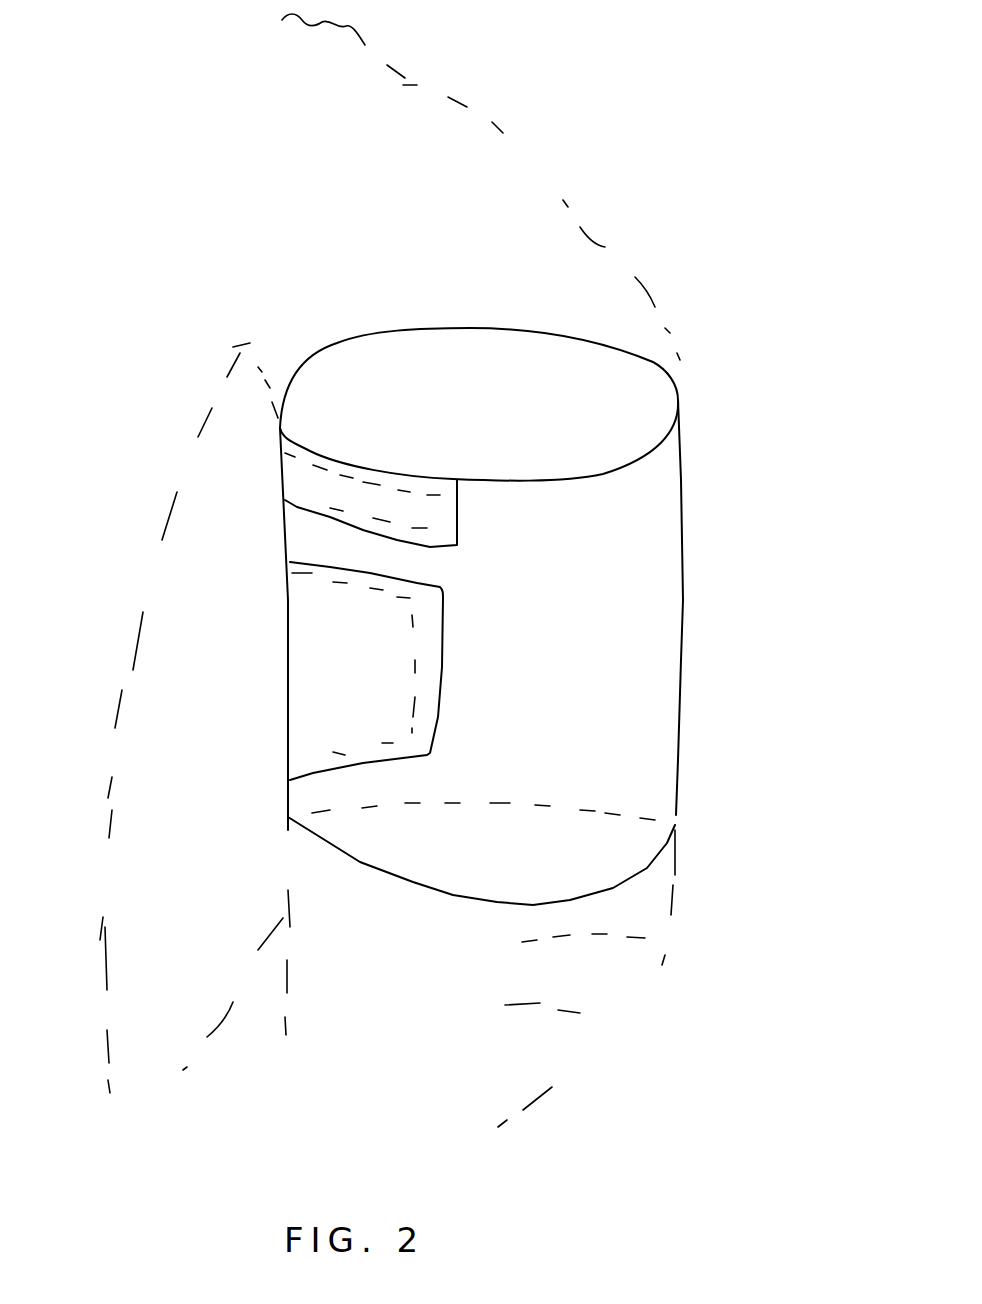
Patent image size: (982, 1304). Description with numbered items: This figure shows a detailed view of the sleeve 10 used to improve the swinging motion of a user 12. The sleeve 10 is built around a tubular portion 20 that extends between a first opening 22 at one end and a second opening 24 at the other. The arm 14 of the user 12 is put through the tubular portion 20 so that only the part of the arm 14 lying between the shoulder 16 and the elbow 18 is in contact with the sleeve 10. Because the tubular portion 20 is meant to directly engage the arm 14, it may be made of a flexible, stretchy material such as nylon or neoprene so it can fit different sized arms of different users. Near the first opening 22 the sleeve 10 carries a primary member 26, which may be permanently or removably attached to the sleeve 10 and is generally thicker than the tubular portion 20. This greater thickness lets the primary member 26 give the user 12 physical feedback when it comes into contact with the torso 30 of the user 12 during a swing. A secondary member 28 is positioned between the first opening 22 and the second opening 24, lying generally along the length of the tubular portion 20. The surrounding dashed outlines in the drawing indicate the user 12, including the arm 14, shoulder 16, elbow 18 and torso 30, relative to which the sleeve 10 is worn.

The sleeve 10 is at (554, 621).
The user 12 is at (22, 837).
The arm 14 is at (676, 936).
The shoulder 16 is at (441, 229).
The elbow 18 is at (605, 1037).
The tubular portion 20 is at (640, 562).
The first opening 22 is at (600, 408).
The second opening 24 is at (597, 838).
The primary member 26 is at (437, 530).
The secondary member 28 is at (415, 665).
The torso 30 is at (28, 660).